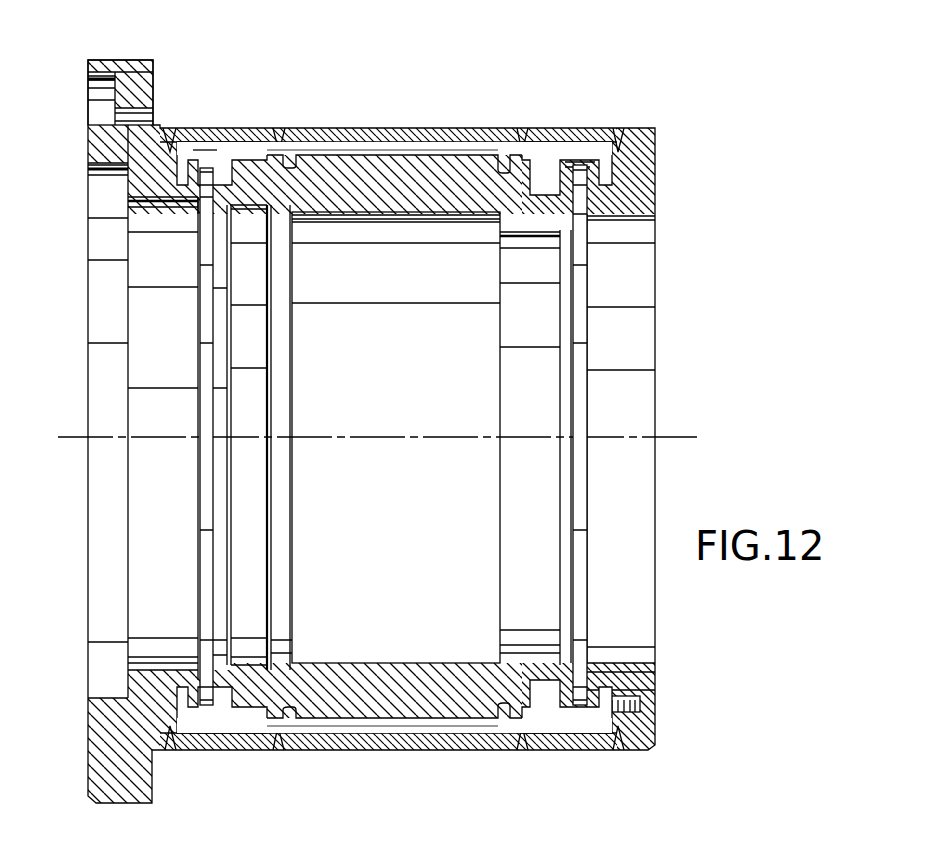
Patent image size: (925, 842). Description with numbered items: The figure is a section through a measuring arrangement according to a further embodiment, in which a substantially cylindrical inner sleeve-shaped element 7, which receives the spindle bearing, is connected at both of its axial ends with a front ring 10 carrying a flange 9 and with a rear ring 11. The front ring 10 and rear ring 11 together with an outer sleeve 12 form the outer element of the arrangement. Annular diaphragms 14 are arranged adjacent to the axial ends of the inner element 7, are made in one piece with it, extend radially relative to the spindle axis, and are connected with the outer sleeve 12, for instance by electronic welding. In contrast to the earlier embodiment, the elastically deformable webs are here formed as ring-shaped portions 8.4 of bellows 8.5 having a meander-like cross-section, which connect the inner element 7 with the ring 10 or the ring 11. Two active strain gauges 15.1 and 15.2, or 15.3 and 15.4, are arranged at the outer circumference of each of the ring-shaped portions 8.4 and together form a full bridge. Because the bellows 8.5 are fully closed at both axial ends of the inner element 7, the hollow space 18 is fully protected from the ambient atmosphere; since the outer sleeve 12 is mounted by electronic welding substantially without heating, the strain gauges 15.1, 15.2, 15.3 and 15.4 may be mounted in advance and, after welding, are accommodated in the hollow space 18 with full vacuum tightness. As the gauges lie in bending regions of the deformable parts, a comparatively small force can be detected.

The inner sleeve-shaped element 7 is at (410, 190).
The ring-shaped portions 8.4 is at (196, 160).
The bellows 8.5 is at (198, 195).
The flange 9 is at (131, 75).
The front ring 10 is at (140, 182).
The rear ring 11 is at (643, 177).
The outer sleeve 12 is at (378, 138).
The annular diaphragms 14 is at (290, 148).
The strain gauge 15.1 is at (212, 152).
The strain gauge 15.2 is at (207, 733).
The strain gauge 15.3 is at (583, 163).
The strain gauge 15.4 is at (577, 728).
The hollow space 18 is at (257, 148).